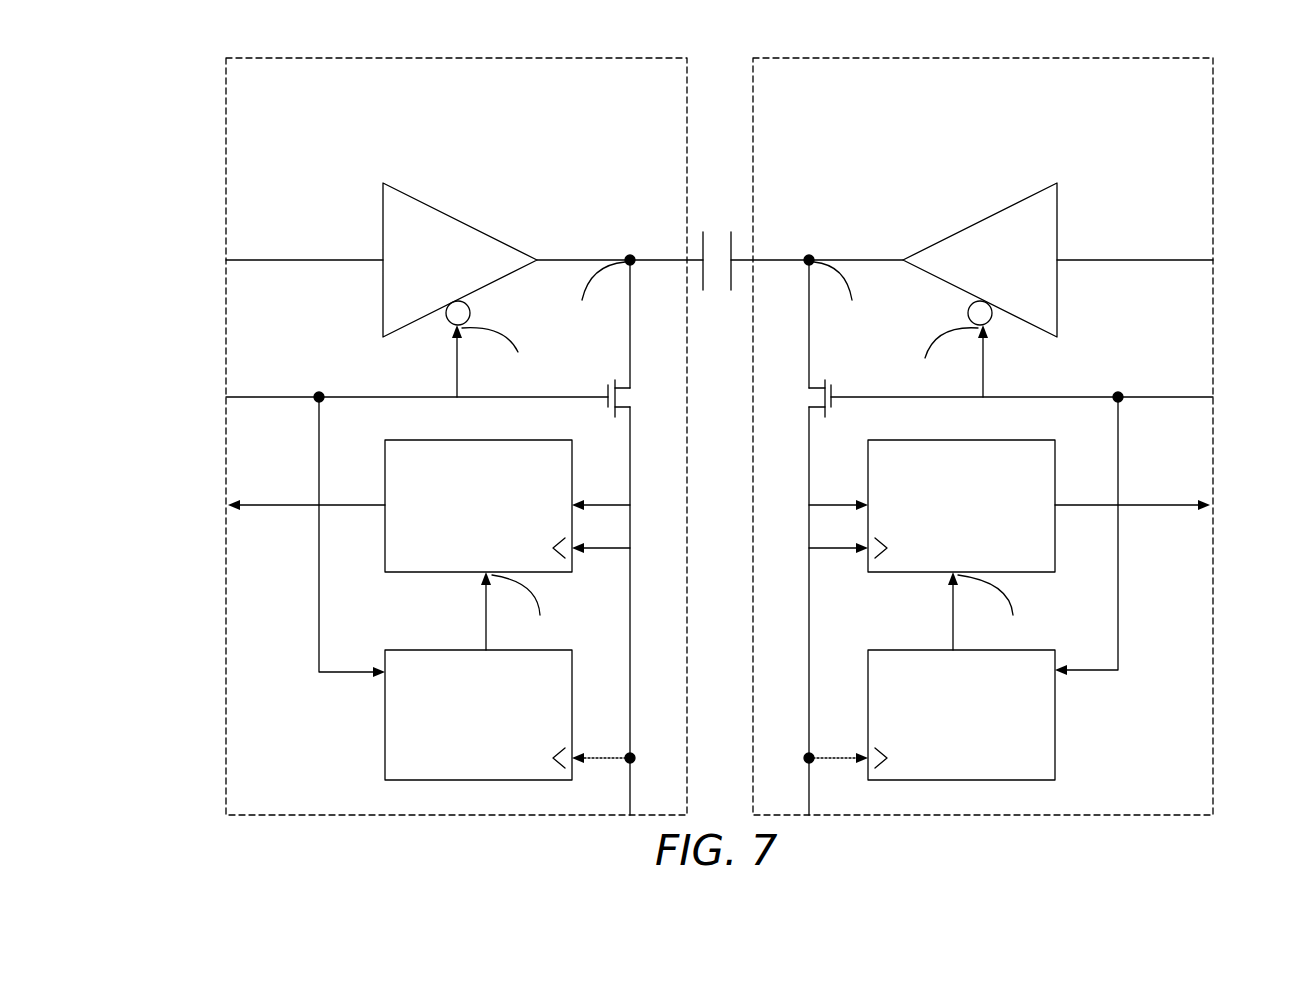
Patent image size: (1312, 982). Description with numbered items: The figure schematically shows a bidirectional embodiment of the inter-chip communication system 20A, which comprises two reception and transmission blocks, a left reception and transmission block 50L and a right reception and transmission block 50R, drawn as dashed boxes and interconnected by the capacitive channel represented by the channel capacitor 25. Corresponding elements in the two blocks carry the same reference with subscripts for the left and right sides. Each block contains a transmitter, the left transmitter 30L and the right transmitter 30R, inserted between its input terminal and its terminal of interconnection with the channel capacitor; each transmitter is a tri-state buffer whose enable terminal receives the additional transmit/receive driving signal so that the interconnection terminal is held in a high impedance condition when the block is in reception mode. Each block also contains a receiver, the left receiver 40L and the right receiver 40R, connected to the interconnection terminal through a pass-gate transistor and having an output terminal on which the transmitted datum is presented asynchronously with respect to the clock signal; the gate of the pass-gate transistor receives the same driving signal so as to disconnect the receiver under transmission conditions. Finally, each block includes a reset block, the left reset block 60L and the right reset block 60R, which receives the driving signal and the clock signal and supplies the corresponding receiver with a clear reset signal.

The bidirectional inter-chip communication system 20A is at (720, 55).
The coupling capacitor Ccc 25 is at (716, 218).
The left transmitter 30L is at (447, 235).
The right transmitter 30R is at (990, 235).
The left receiver 40L is at (434, 465).
The right receiver 40R is at (1018, 465).
The left reception and transmission block 50L is at (273, 140).
The right reception and transmission block 50R is at (1168, 138).
The left reset block 60L is at (413, 693).
The right reset block 60R is at (1030, 705).